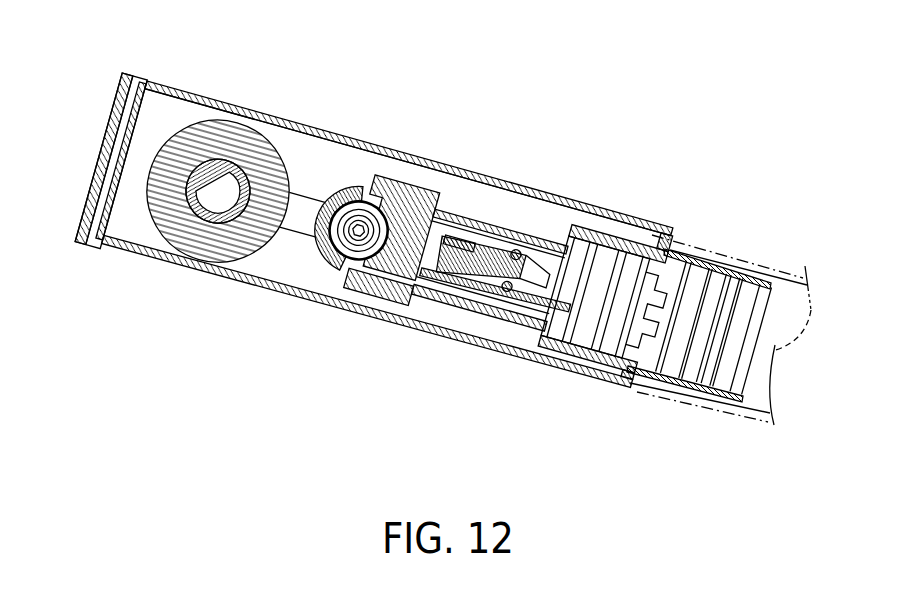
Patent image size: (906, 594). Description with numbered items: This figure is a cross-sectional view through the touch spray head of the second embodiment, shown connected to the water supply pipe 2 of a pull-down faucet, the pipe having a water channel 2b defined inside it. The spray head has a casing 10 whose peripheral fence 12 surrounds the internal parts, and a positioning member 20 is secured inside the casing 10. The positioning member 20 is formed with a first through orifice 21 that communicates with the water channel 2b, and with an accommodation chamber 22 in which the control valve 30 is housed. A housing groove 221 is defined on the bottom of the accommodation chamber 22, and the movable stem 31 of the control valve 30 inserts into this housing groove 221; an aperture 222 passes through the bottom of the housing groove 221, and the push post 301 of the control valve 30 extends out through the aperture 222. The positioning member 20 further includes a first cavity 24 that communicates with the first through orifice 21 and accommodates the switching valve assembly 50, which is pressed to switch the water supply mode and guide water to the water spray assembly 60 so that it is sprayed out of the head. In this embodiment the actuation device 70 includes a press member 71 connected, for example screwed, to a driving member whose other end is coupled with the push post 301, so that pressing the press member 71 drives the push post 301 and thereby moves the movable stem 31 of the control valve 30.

The water supply pipe 2 is at (737, 246).
The water channel 2b is at (774, 352).
The casing 10 is at (416, 150).
The peripheral fence 12 is at (205, 95).
The positioning member 20 is at (586, 222).
The first through orifice 21 is at (467, 225).
The accommodation chamber 22 is at (603, 268).
The first cavity 24 is at (358, 211).
The control valve 30 is at (568, 350).
The movable stem 31 is at (523, 283).
The switching valve assembly 50 is at (336, 264).
The water spray assembly 60 is at (244, 229).
The actuation device 70 is at (87, 140).
The press member 71 is at (90, 188).
The housing groove 221 is at (521, 300).
The aperture 222 is at (502, 262).
The push post 301 is at (470, 265).